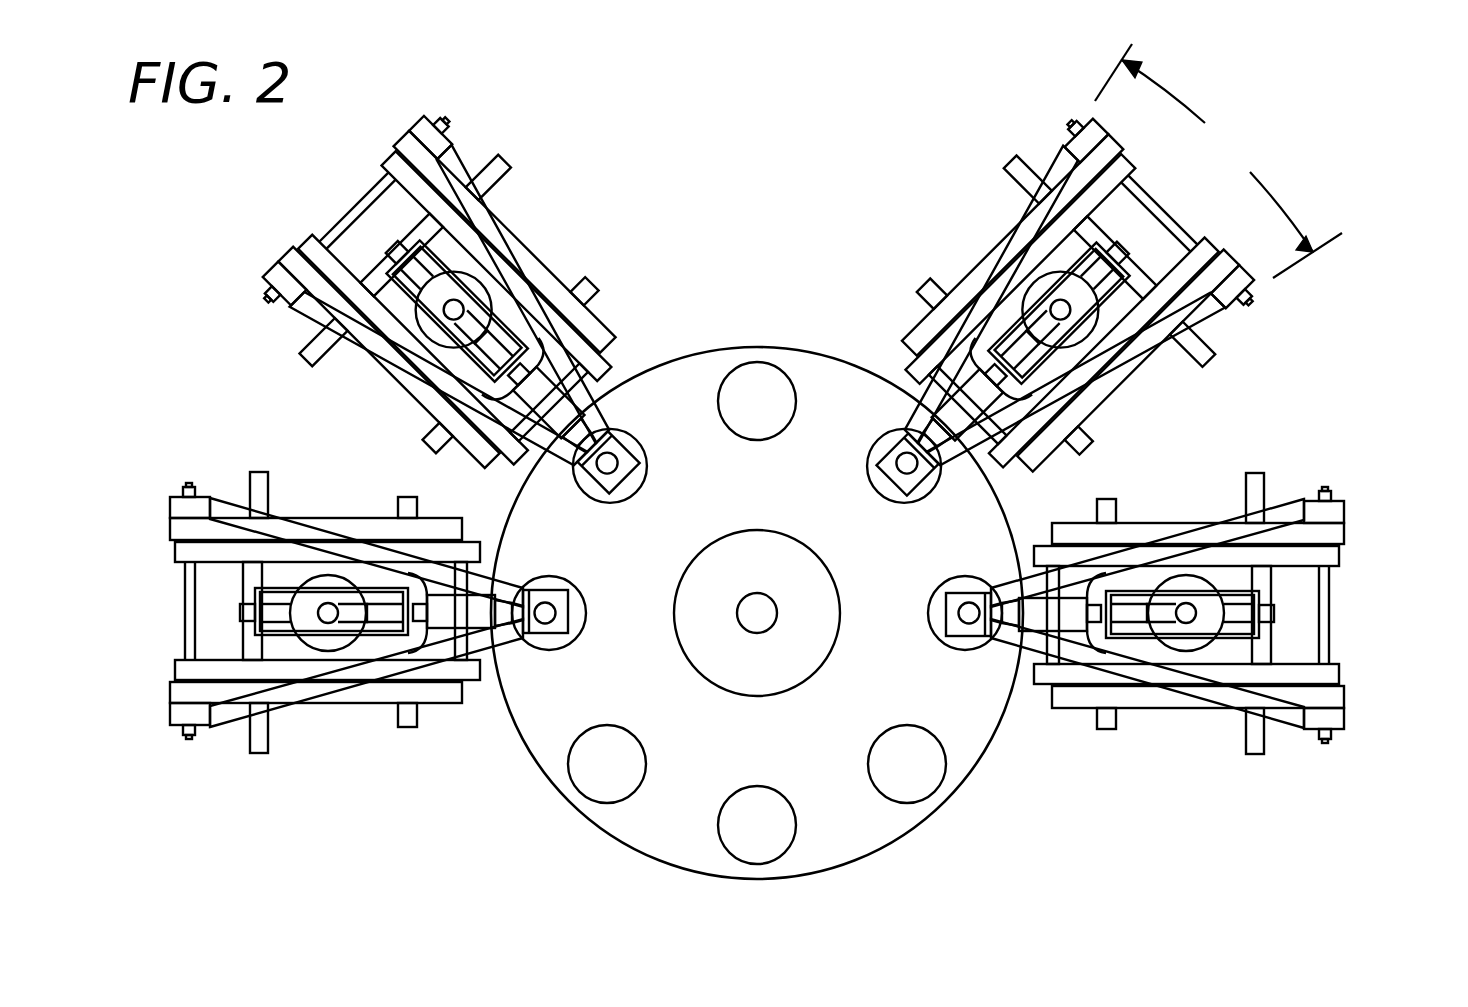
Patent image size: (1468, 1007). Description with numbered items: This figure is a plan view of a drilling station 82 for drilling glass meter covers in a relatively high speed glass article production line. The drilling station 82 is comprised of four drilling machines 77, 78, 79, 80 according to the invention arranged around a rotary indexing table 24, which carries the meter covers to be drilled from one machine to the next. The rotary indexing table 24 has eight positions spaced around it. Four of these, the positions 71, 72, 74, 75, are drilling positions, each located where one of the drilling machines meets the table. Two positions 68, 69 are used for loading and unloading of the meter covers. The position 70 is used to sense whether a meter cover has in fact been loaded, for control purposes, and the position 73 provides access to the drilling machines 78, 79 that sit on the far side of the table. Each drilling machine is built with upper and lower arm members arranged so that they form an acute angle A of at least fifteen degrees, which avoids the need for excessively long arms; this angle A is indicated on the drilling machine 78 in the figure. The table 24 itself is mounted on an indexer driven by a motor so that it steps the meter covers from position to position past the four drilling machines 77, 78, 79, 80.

The rotary indexing table 24 is at (962, 797).
The loading/unloading position 68 is at (636, 735).
The loading/unloading position 69 is at (767, 786).
The sensing position 70 is at (880, 735).
The access position 73 is at (785, 440).
The drilling position 71 is at (928, 613).
The drilling position 72 is at (886, 499).
The drilling position 74 is at (643, 487).
The drilling position 75 is at (578, 585).
The drilling machine 77 is at (1338, 500).
The drilling machine 78 is at (1254, 293).
The drilling machine 79 is at (422, 118).
The drilling machine 80 is at (194, 486).
The drilling station 82 is at (1318, 163).
The acute angle A is at (1217, 156).